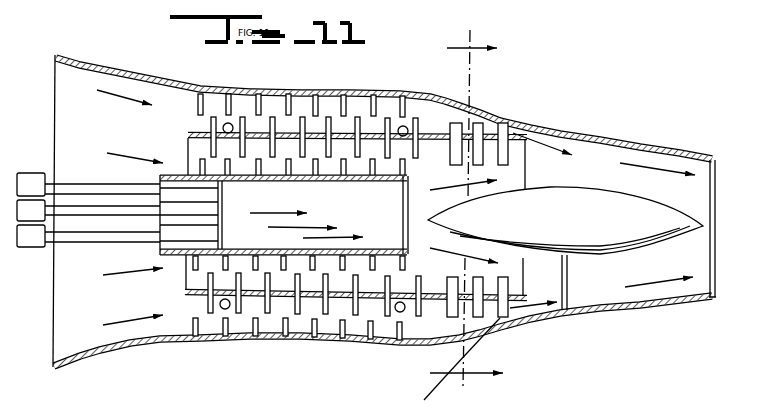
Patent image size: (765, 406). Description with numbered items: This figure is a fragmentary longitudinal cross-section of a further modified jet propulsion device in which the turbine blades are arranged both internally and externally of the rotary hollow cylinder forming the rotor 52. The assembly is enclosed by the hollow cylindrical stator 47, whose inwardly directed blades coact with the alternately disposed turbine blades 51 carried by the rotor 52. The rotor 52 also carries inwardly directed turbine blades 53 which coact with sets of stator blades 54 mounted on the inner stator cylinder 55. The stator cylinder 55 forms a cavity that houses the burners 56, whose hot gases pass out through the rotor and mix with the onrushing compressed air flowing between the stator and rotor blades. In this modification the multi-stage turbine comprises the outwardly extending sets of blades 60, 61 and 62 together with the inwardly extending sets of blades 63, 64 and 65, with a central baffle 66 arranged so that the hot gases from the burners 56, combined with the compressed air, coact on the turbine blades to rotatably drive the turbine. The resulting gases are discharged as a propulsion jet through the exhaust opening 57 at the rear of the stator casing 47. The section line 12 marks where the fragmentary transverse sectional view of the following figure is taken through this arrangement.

The section line 12— 12 is at (480, 203).
The hollow cylindrical stator 47 is at (333, 95).
The turbine blades 51 is at (213, 127).
The rotor 52 is at (188, 135).
The turbine blades 53 is at (367, 134).
The stator blades 54 is at (323, 183).
The stator cylinder 55 is at (157, 252).
The burners 56 is at (160, 212).
The exhaust opening 57 is at (705, 175).
The outwardly extending set of blades 60 is at (456, 128).
The outwardly extending set of blades 61 is at (478, 130).
The outwardly extending set of blades 62 is at (512, 128).
The inwardly extending set of blades 63 is at (453, 277).
The inwardly extending set of blades 64 is at (473, 280).
The inwardly extending set of blades 65 is at (507, 160).
The central baffle 66 is at (593, 200).